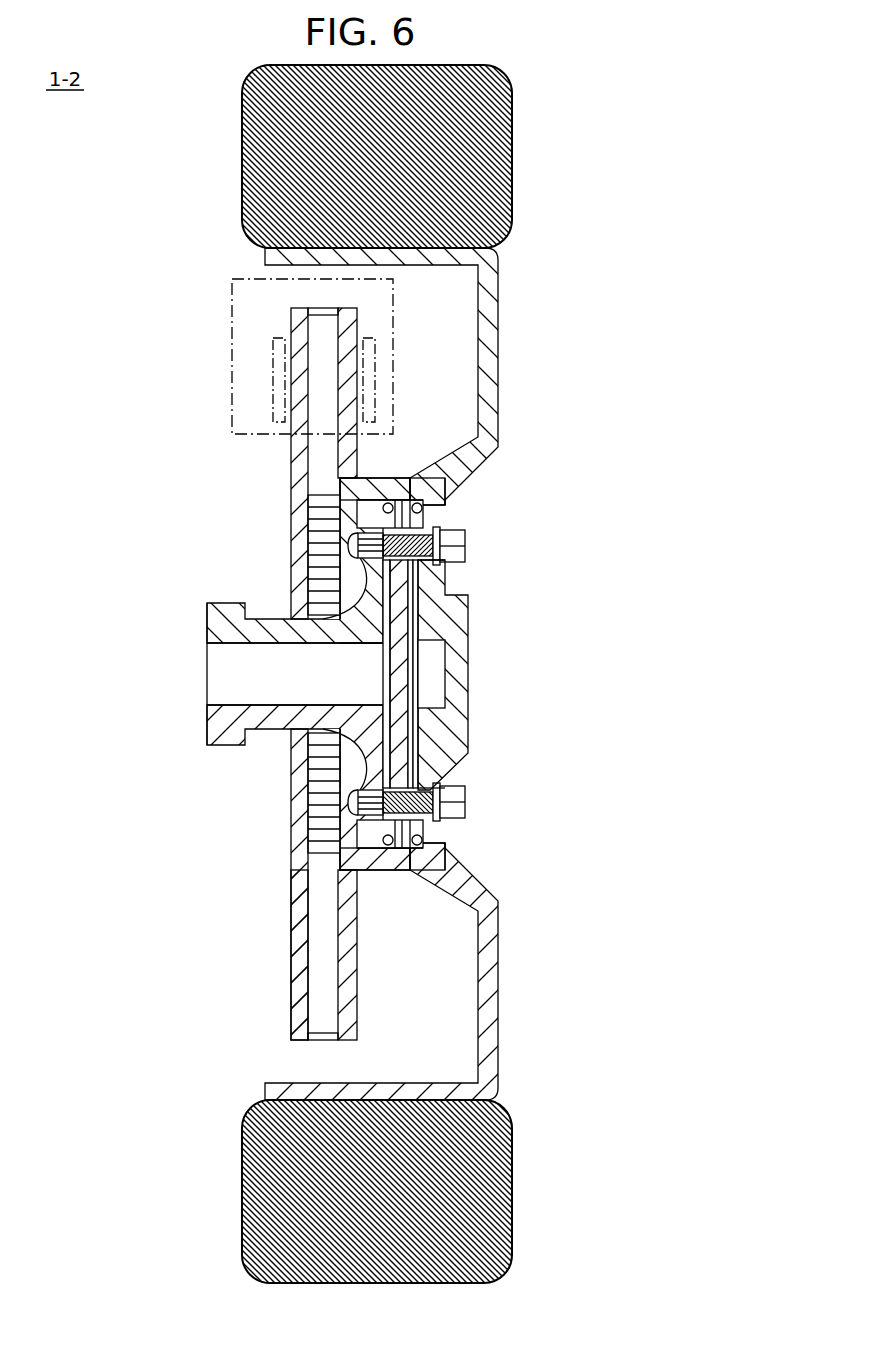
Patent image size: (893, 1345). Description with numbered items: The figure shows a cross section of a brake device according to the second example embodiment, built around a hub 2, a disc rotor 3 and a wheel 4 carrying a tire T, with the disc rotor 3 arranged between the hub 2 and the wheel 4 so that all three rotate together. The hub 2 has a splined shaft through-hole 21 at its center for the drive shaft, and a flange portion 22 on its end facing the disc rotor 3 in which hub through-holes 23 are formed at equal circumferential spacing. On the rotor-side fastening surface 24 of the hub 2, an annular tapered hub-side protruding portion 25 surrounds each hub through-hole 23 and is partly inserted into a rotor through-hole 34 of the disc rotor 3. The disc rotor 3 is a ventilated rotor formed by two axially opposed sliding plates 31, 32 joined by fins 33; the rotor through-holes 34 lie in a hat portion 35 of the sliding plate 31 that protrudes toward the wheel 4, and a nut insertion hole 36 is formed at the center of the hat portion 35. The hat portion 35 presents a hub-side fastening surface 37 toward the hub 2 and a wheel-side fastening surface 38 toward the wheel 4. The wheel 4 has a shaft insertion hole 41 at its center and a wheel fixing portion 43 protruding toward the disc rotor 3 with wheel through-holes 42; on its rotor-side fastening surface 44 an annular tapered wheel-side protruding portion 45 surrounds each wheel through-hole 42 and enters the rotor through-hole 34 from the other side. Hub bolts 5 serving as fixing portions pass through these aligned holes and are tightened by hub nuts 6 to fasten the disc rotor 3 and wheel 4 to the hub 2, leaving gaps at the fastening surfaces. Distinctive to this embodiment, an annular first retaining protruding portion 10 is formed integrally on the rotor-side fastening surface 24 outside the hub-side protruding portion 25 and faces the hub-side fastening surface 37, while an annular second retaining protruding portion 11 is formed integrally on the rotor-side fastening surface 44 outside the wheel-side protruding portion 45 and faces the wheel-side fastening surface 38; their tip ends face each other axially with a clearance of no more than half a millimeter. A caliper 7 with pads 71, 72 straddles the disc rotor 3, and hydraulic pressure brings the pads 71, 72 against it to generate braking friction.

The tire T is at (507, 152).
The hub 2 is at (207, 630).
The disc rotor 3 is at (321, 674).
The wheel 4 is at (500, 352).
The hub bolt 5 is at (372, 527).
The hub nut 6 is at (467, 547).
The caliper 7 is at (309, 356).
The first retaining protruding portion 10 is at (392, 500).
The second retaining protruding portion 11 is at (418, 500).
The shaft through-hole 21 is at (272, 718).
The flange portion 22 is at (358, 575).
The hub through-hole 23 is at (340, 556).
The rotor-side fastening surface 24 is at (390, 600).
The hub-side protruding portion 25 is at (366, 500).
The sliding plate 31 is at (350, 988).
The sliding plate 32 is at (298, 983).
The fin 33 is at (325, 457).
The rotor through-hole 34 is at (404, 498).
The hat portion 35 is at (400, 615).
The nut insertion hole 36 is at (405, 672).
The hub-side fastening surface 37 is at (365, 645).
The wheel-side fastening surface 38 is at (410, 630).
The shaft insertion hole 41 is at (455, 692).
The wheel through-hole 42 is at (440, 524).
The wheel fixing portion 43 is at (440, 503).
The rotor-side fastening surface 44 is at (368, 583).
The wheel-side protruding portion 45 is at (432, 580).
The pad 71 is at (385, 380).
The pad 72 is at (268, 380).